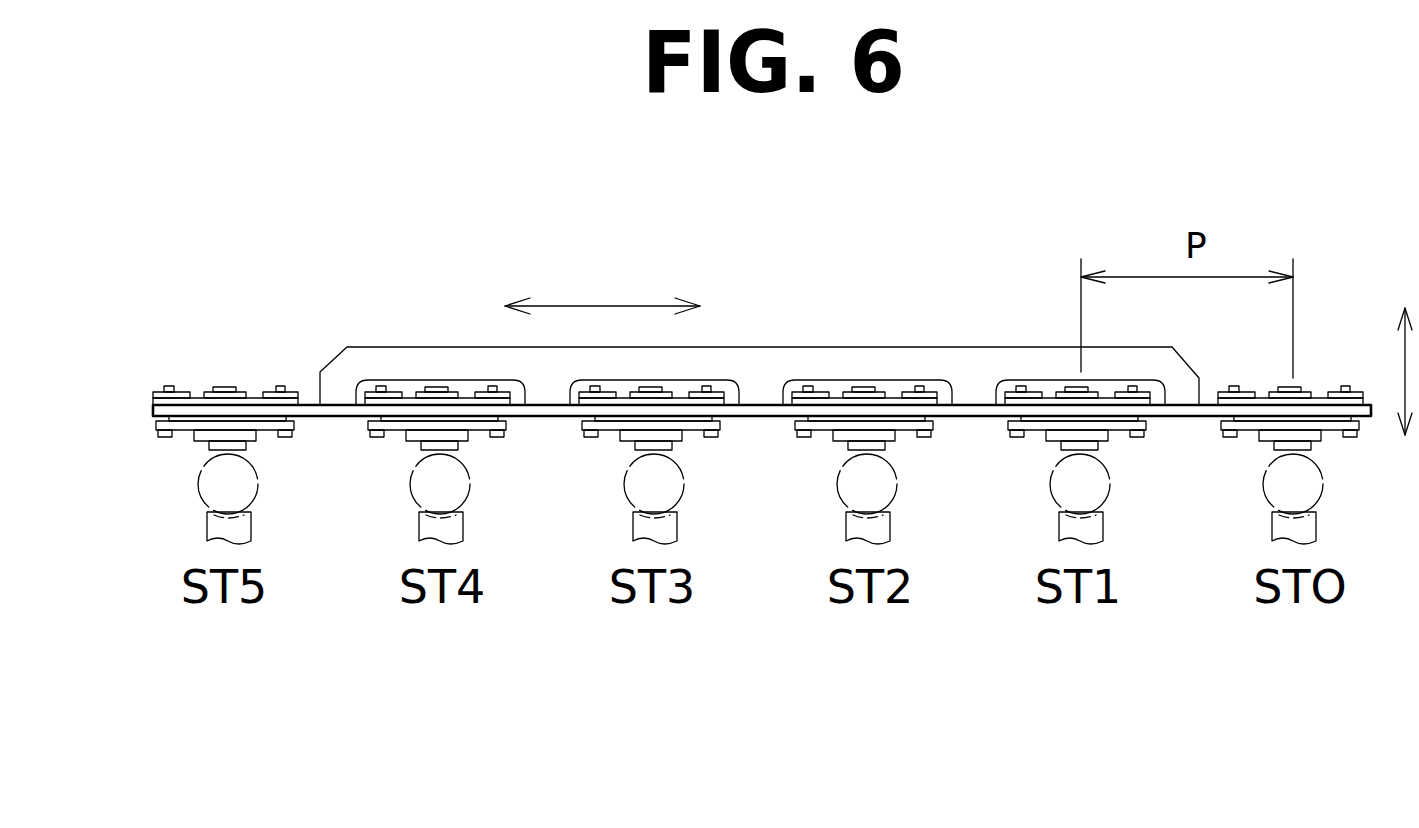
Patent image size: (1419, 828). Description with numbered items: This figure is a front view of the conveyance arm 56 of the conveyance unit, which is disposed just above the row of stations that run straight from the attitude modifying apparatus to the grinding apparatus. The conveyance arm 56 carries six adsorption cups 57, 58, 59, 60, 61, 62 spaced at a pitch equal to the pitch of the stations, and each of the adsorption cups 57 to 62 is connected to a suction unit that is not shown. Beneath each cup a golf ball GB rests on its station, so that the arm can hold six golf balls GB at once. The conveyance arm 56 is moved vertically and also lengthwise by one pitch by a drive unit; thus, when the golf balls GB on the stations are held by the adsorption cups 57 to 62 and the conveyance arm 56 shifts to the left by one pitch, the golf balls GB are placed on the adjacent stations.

The conveyance arm 56 is at (967, 405).
The adsorption cup 57 is at (1318, 443).
The adsorption cup 58 is at (1110, 465).
The adsorption cup 59 is at (897, 465).
The adsorption cup 60 is at (684, 465).
The adsorption cup 61 is at (470, 465).
The adsorption cup 62 is at (258, 465).
The golf ball GB is at (1264, 480).